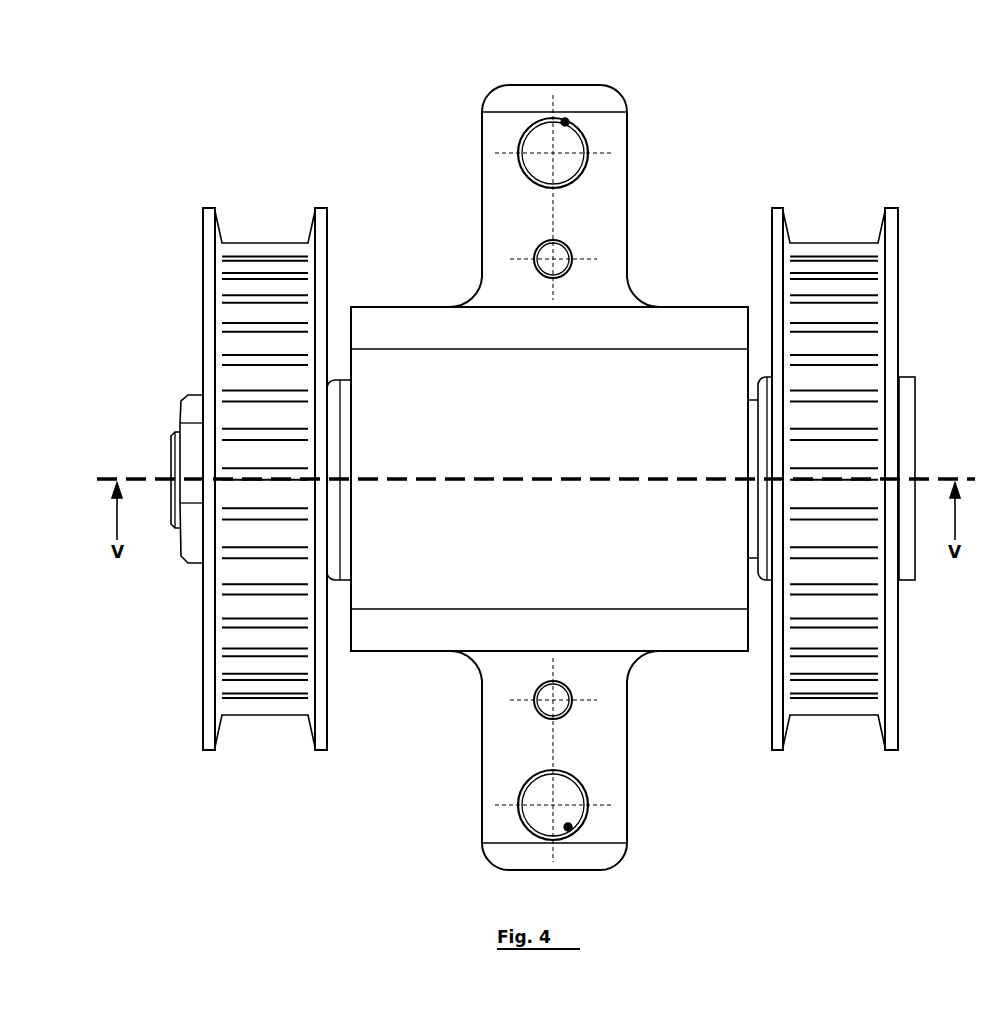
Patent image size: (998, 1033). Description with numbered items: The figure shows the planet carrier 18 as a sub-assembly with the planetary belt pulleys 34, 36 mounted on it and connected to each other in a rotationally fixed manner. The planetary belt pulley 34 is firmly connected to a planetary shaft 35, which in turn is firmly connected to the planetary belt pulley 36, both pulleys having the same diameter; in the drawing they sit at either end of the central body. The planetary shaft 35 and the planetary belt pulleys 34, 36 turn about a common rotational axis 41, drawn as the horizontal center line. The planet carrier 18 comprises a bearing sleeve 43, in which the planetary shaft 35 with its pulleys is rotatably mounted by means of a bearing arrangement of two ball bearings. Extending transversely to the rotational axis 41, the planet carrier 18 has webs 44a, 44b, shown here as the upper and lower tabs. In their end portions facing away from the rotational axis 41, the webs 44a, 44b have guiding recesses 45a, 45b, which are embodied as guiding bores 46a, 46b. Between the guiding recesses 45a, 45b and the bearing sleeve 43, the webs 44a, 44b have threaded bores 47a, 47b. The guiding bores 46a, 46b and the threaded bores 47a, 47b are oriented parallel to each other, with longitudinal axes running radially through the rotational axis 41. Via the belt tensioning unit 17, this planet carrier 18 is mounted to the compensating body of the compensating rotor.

The belt tensioning unit 17 is at (503, 449).
The planet carrier 18 is at (688, 414).
The planetary belt pulley 34 is at (262, 660).
The planetary shaft 35 is at (172, 450).
The planetary belt pulley 36 is at (838, 643).
The rotational axis 41 is at (579, 482).
The bearing sleeve 43 is at (477, 414).
The web 44a is at (597, 188).
The web 44b is at (590, 747).
The guiding recess 45a is at (593, 108).
The guiding recess 45b is at (628, 814).
The guiding bore 46a is at (566, 124).
The guiding bore 46b is at (568, 826).
The threaded bore 47a is at (572, 243).
The threaded bore 47b is at (532, 678).